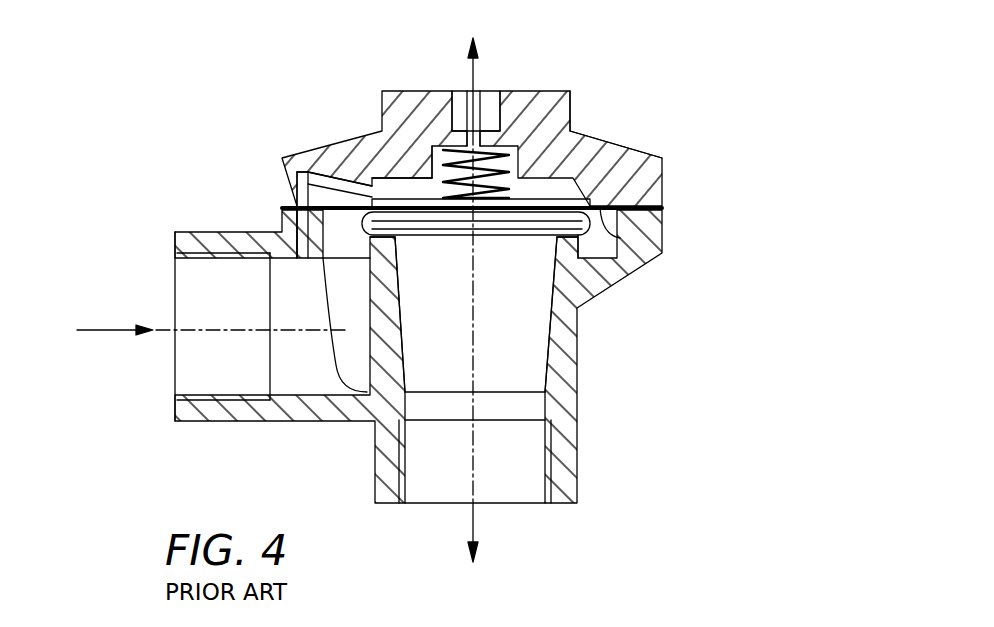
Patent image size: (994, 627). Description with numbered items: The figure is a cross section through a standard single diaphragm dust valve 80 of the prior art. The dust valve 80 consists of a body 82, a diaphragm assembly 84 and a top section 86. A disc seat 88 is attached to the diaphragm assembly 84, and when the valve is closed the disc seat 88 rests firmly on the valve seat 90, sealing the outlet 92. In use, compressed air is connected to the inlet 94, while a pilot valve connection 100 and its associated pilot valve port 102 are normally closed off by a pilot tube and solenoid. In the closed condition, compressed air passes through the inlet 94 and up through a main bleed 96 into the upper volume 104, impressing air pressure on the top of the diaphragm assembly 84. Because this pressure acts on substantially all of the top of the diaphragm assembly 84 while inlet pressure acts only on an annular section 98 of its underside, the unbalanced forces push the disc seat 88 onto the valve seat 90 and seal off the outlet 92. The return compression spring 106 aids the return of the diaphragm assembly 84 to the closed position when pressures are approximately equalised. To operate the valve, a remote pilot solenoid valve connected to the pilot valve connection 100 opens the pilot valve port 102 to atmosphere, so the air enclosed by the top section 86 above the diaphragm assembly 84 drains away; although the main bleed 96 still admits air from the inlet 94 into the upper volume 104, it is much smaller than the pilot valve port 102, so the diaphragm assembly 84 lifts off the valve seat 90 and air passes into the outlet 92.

The dust valve 80 is at (155, 140).
The body 82 is at (242, 428).
The diaphragm assembly 84 is at (597, 185).
The top section 86 is at (598, 136).
The disc seat 88 is at (517, 220).
The valve seat 90 is at (383, 243).
The outlet 92 is at (527, 495).
The inlet 94 is at (190, 362).
The main bleed 96 is at (297, 181).
The annular section 98 is at (620, 238).
The pilot valve connection 100 is at (467, 93).
The pilot valve port 102 is at (485, 128).
The upper volume 104 is at (388, 190).
The return compression spring 106 is at (517, 143).